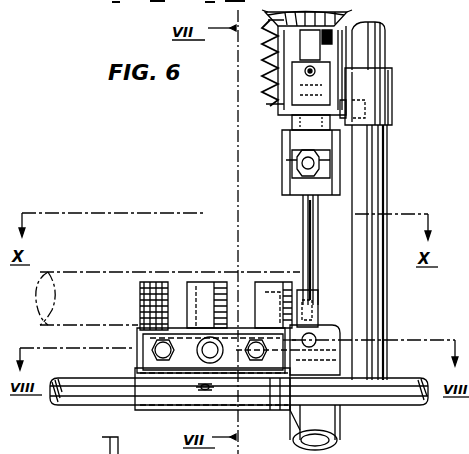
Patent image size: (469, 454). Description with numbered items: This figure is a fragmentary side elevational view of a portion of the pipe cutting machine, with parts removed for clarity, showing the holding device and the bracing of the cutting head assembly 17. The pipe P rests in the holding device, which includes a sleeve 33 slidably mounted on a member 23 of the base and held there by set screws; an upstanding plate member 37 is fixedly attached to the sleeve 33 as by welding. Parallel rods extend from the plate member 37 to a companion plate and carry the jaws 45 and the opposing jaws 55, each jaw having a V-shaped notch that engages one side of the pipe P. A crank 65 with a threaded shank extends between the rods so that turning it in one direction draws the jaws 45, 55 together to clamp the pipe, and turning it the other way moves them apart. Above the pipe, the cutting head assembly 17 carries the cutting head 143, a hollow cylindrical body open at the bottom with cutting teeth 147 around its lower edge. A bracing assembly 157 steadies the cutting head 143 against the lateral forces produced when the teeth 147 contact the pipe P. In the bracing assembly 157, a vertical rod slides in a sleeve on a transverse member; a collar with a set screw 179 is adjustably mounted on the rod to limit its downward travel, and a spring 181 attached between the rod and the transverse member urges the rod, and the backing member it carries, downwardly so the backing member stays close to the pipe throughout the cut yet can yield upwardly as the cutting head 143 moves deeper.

The spring 181 is at (262, 76).
The set screw 179 is at (343, 68).
The cutting head assembly 17 is at (343, 163).
The bracing assembly 157 is at (466, 142).
The cutting head 143 is at (290, 172).
The cutting teeth 147 is at (328, 190).
The jaws 55 is at (140, 307).
The pipe P is at (78, 272).
The jaws 45 is at (203, 282).
The plate member 37 is at (140, 362).
The member 23 is at (374, 404).
The sleeve 33 is at (158, 408).
The crank 65 is at (68, 453).